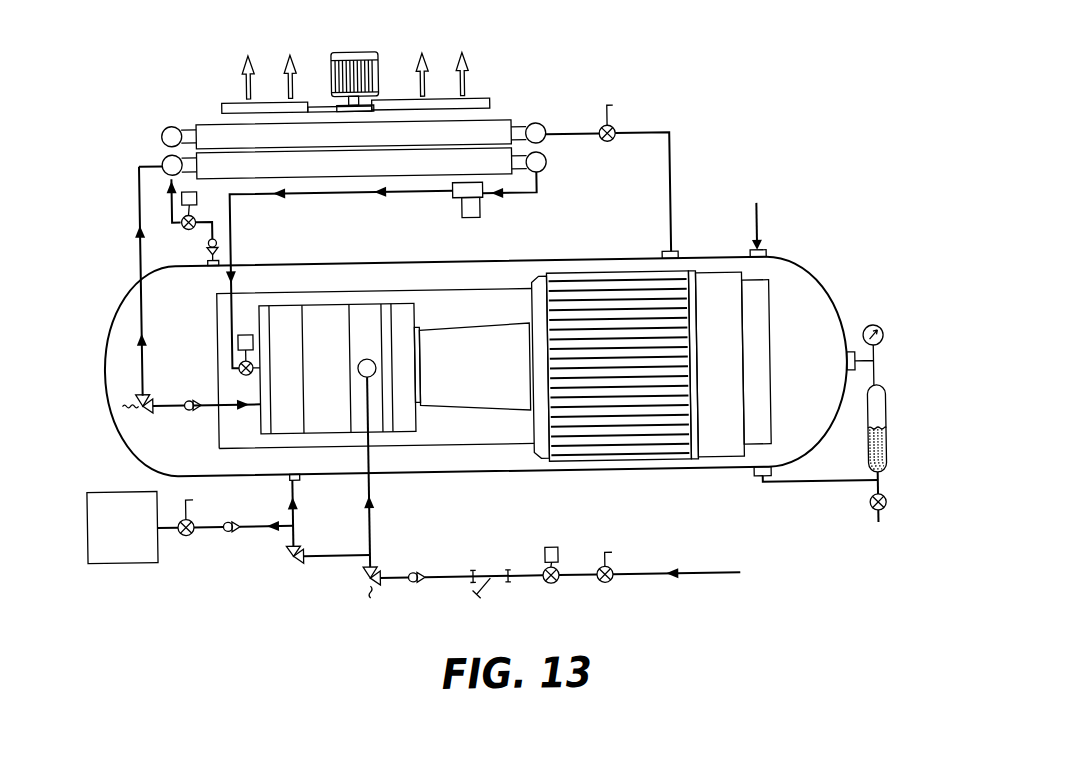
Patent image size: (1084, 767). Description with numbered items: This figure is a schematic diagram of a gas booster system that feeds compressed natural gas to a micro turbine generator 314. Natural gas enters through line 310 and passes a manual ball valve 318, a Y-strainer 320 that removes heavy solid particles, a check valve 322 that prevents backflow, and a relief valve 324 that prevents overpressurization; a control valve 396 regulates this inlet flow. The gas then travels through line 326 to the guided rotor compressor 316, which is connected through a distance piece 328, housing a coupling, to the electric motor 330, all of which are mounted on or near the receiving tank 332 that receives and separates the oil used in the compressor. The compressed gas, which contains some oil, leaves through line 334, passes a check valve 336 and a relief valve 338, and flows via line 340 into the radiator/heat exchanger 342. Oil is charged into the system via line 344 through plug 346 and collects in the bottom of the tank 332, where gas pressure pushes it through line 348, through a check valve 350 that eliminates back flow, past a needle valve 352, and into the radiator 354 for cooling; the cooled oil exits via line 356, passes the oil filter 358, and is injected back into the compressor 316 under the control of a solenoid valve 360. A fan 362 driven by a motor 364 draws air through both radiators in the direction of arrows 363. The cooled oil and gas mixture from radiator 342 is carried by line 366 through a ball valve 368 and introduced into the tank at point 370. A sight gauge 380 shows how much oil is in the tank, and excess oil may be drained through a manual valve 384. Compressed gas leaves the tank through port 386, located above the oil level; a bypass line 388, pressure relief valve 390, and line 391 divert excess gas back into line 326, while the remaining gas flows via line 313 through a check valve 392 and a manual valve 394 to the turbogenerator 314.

The line 310 is at (697, 581).
The line 313 is at (250, 523).
The micro turbine generator 314 is at (122, 528).
The guided rotor compressor 316 is at (340, 368).
The manual ball valve 318 is at (612, 572).
The Y-strainer 320 is at (482, 578).
The check valve 322 is at (410, 584).
The relief valve 324 is at (365, 583).
The line 326 is at (370, 488).
The distance piece 328 is at (474, 367).
The electric motor 330 is at (770, 366).
The tank 332 is at (829, 291).
The line 334 is at (230, 399).
The check valve 336 is at (185, 405).
The relief valve 338 is at (142, 402).
The line 340 is at (143, 189).
The radiator/heat exchanger 342 is at (212, 123).
The line 344 is at (762, 227).
The plug 346 is at (764, 257).
The line 348 is at (172, 208).
The relief valve 350 is at (220, 238).
The needle valve 352 is at (182, 223).
The radiator 354 is at (484, 155).
The line 356 is at (519, 193).
The oil filter 358 is at (465, 207).
The solenoid valve 360 is at (238, 336).
The fan 362 is at (314, 97).
The arrows 363 is at (295, 77).
The motor 364 is at (363, 50).
The line 366 is at (577, 134).
The ball valve 368 is at (616, 130).
The point 370 is at (664, 259).
The sight gauge 380 is at (864, 459).
The manual valve 384 is at (866, 512).
The port 386 is at (288, 475).
The bypass line 388 is at (294, 489).
The pressure relief valve 390 is at (289, 557).
The line 391 is at (317, 555).
The check valve 392 is at (222, 528).
The manual valve 394 is at (182, 527).
The control valve 396 is at (542, 548).